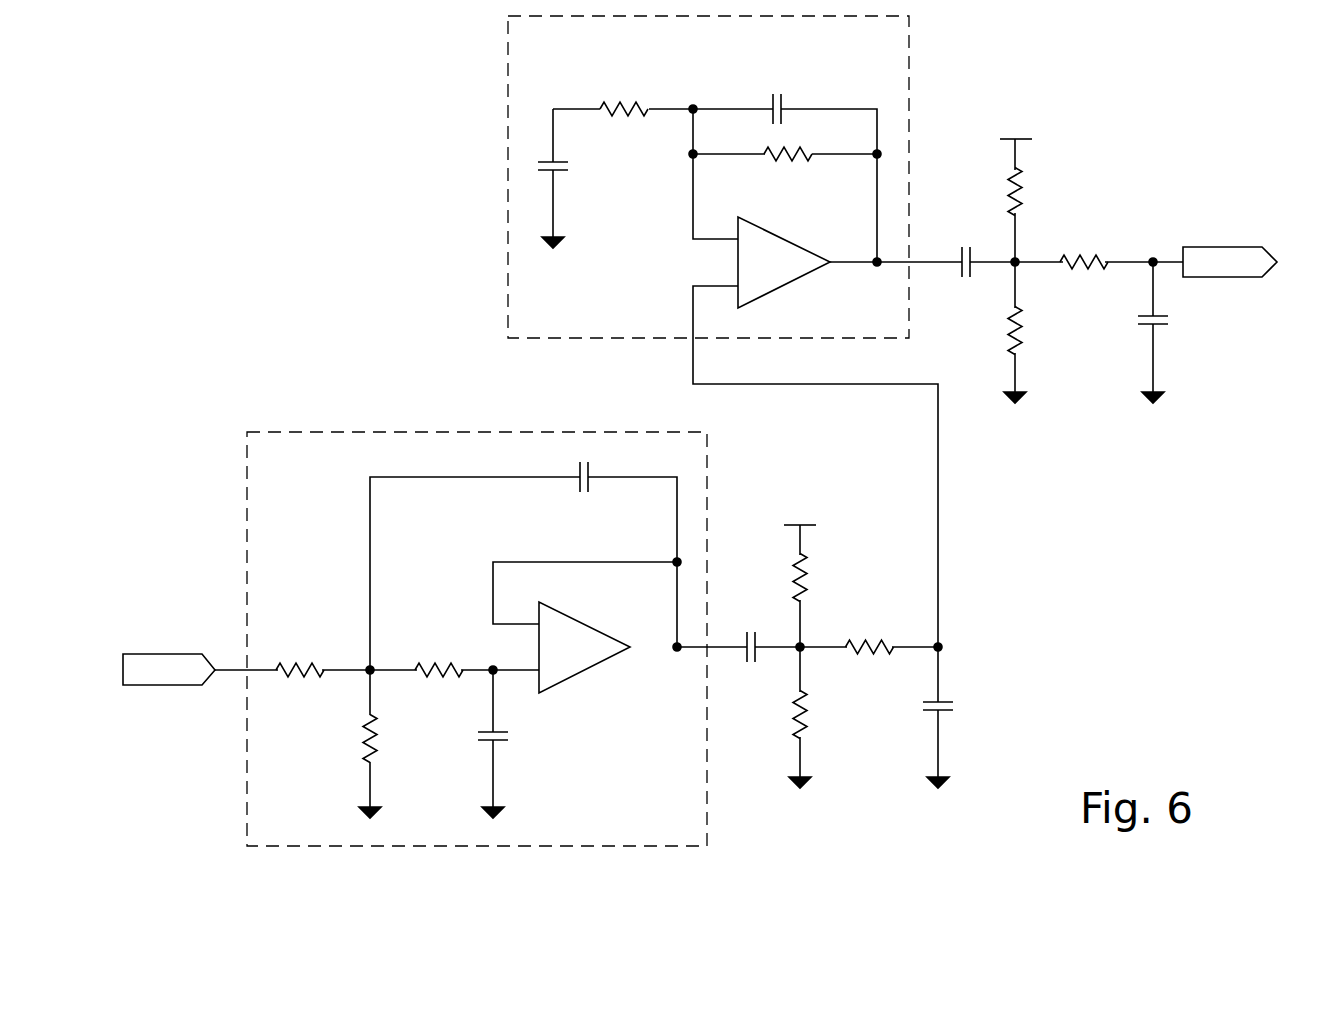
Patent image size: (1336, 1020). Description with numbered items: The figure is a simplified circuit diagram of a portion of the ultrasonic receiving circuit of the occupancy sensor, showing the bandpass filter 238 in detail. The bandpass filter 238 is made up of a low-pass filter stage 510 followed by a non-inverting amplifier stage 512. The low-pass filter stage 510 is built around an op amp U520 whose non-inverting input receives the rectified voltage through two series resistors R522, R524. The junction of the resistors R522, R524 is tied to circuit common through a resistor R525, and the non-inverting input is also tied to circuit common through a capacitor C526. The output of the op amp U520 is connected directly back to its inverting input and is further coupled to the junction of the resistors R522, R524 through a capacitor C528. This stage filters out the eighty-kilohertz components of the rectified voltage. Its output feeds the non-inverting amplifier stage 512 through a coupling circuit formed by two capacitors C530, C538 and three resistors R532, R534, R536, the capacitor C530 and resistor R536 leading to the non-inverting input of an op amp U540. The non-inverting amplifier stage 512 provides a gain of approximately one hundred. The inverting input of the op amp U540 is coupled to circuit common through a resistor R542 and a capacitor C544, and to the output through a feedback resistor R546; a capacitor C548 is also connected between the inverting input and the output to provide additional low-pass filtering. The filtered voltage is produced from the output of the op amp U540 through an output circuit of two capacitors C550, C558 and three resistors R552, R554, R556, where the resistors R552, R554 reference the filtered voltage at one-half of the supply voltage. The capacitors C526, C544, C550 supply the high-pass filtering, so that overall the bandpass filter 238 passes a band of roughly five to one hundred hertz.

The bandpass filter 238 is at (258, 199).
The low-pass filter stage 510 is at (415, 432).
The non-inverting amplifier stage 512 is at (508, 140).
The resistor R522 is at (292, 660).
The resistor R524 is at (418, 660).
The resistor R525 is at (362, 730).
The capacitor C526 is at (502, 740).
The capacitor C528 is at (578, 483).
The op amp U520 is at (582, 647).
The capacitor C530 is at (762, 653).
The resistor R532 is at (813, 573).
The resistor R534 is at (812, 713).
The resistor R536 is at (875, 640).
The capacitor C538 is at (948, 697).
The op amp U540 is at (760, 262).
The resistor R542 is at (632, 104).
The capacitor C544 is at (570, 158).
The resistor R546 is at (776, 157).
The capacitor C548 is at (781, 100).
The capacitor C550 is at (977, 254).
The resistor R552 is at (1030, 185).
The resistor R554 is at (1020, 328).
The resistor R556 is at (1100, 256).
The capacitor C558 is at (1168, 322).